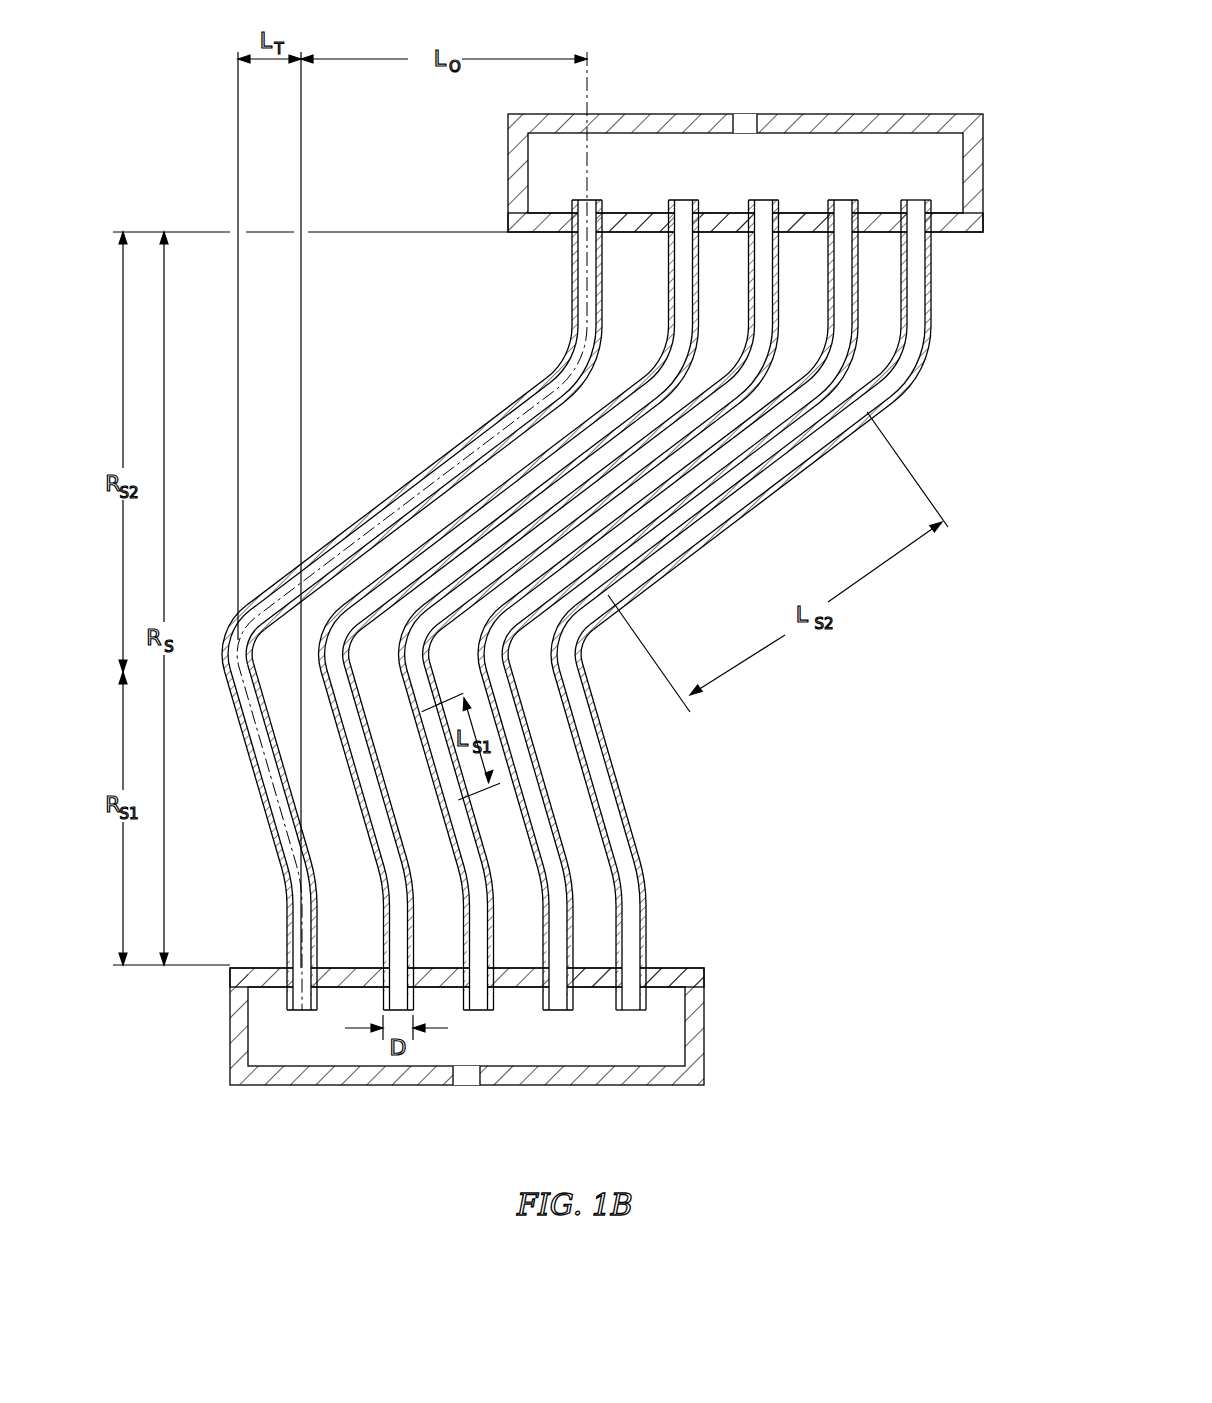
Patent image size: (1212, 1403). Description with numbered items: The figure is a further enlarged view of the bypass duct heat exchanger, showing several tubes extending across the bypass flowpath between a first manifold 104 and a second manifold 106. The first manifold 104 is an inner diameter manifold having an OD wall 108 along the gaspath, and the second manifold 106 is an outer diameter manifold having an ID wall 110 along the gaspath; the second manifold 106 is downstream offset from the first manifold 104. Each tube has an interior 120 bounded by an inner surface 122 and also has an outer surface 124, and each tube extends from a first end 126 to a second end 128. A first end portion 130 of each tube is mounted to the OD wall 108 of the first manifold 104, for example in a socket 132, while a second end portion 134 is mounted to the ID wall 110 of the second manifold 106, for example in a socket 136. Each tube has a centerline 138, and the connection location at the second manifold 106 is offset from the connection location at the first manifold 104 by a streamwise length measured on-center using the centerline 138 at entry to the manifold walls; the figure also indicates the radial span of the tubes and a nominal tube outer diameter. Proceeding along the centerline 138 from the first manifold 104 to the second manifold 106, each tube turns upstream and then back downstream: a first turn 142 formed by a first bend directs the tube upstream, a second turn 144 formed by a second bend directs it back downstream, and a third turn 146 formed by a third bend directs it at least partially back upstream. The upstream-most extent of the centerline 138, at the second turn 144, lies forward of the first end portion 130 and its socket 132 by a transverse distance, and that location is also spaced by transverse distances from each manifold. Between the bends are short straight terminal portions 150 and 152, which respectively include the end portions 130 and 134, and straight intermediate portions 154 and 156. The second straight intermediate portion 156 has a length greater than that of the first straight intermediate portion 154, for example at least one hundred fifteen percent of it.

The first manifold 104 is at (528, 995).
The second manifold 106 is at (746, 164).
The OD wall 108 is at (509, 927).
The ID wall 110 is at (745, 233).
The interior 120 is at (387, 531).
The inner surface 122 is at (430, 473).
The outer surface 124 is at (753, 605).
The first end 126 is at (594, 1029).
The second end 128 is at (882, 173).
The first end portion 130 is at (589, 961).
The socket 132 is at (632, 978).
The second end portion 134 is at (809, 238).
The socket 136 is at (765, 222).
The centerline 138 is at (617, 207).
The first turn 142 is at (260, 851).
The second turn 144 is at (209, 645).
The third turn 146 is at (540, 346).
The short straight terminal portion 150 is at (685, 934).
The short straight terminal portion 152 is at (951, 301).
The first straight intermediate portion 154 is at (642, 737).
The second straight intermediate portion 156 is at (734, 503).